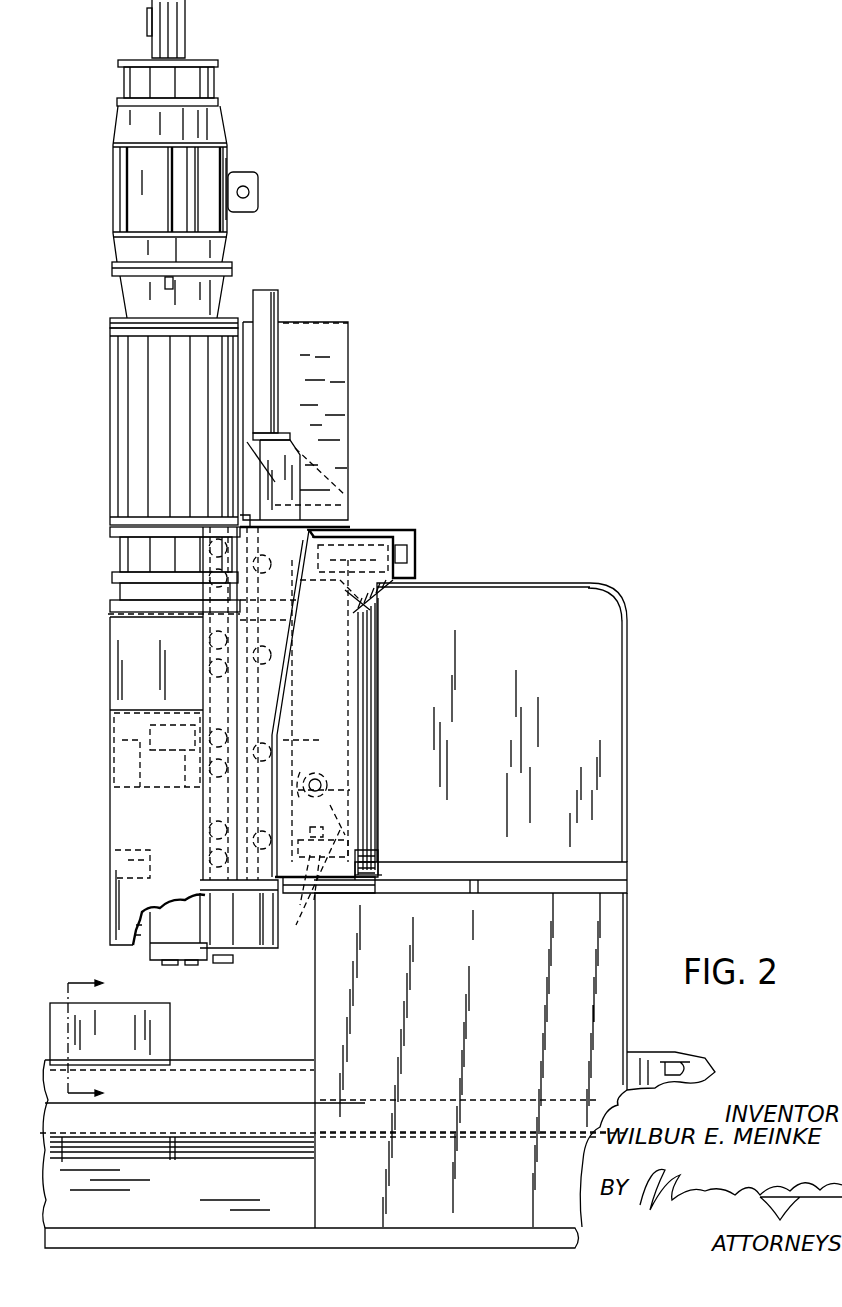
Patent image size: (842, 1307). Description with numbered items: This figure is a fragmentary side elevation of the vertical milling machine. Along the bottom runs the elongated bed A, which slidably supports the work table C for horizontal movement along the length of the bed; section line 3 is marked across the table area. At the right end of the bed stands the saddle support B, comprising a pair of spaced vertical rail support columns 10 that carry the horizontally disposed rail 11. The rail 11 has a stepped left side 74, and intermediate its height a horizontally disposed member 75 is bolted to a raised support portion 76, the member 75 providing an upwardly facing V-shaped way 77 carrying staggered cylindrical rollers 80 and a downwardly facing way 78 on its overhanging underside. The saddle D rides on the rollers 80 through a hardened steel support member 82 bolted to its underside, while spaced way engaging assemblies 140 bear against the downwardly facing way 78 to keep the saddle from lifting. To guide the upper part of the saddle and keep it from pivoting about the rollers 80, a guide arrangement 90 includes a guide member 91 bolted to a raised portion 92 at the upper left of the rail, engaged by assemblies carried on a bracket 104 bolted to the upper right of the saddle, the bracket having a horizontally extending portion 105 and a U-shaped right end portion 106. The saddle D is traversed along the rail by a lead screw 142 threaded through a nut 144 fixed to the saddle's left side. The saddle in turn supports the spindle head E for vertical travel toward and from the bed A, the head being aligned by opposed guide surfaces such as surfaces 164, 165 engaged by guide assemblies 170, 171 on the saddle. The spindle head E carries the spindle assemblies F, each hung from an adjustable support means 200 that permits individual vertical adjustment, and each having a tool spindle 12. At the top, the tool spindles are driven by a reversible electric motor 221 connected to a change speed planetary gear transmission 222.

The reversible electric motor 221 is at (232, 168).
The change speed planetary gear transmission 222 is at (118, 388).
The guide assembly 170 is at (350, 500).
The saddle D is at (360, 518).
The horizontally extending portion 105 is at (383, 528).
The bracket 104 is at (410, 528).
The guide arrangement 90 is at (418, 540).
The U-shaped right end portion 106 is at (419, 558).
The guide member 91 is at (384, 594).
The raised portion 92 is at (377, 618).
The rail 11 is at (615, 665).
The saddle support B is at (630, 790).
The rail support column 10 is at (482, 962).
The left side 74 is at (315, 982).
The table C is at (162, 1035).
The section line 3- 3 is at (89, 1039).
The bed A is at (176, 1228).
The spindle head E is at (130, 657).
The adjustable support means 200 is at (118, 776).
The spindle assembly F is at (160, 823).
The guide surface 165 is at (245, 585).
The guide surface 164 is at (245, 603).
The guide assembly 171 is at (215, 572).
The nut 144 is at (312, 770).
The lead screw 142 is at (330, 786).
The support member 82 is at (332, 832).
The upwardly facing way 77 is at (372, 820).
The cylindrical roller 80 is at (382, 838).
The raised support portion 76 is at (376, 895).
The horizontally disposed member 75 is at (332, 905).
The downwardly facing way 78 is at (318, 918).
The way engaging assembly 140 is at (309, 888).
The tool spindle 12 is at (172, 962).